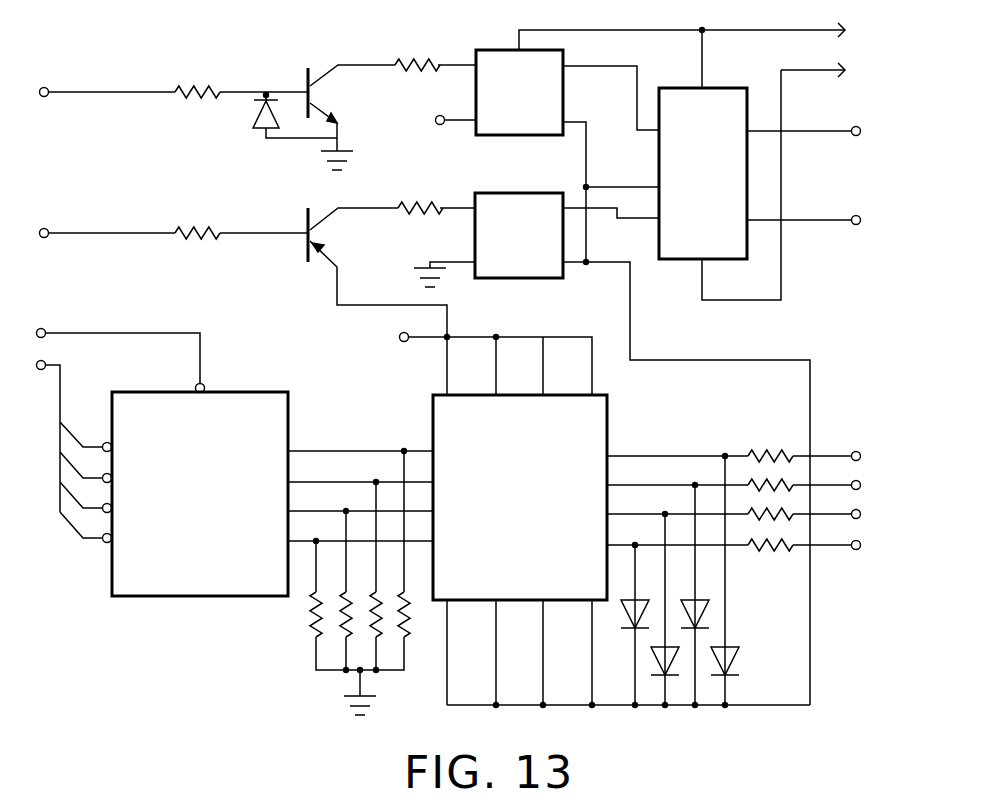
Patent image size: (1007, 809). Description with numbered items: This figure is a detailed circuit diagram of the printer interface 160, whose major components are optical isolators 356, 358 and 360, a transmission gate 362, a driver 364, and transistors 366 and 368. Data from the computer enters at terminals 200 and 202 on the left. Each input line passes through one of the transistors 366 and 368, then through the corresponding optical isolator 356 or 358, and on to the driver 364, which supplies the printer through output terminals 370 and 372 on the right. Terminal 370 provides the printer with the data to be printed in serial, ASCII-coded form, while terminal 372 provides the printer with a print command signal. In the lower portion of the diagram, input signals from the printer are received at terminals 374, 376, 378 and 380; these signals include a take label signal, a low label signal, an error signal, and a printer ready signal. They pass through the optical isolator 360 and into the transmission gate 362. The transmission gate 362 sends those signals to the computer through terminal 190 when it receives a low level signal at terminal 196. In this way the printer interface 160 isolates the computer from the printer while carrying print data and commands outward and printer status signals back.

The terminal 202 is at (49, 89).
The terminal 200 is at (49, 230).
The transistor 366 is at (325, 66).
The transistor 368 is at (320, 209).
The optical isolator 356 is at (506, 49).
The optical isolator 358 is at (522, 193).
The driver 364 is at (695, 87).
The terminal 370 is at (860, 128).
The terminal 372 is at (860, 217).
The terminal 196 is at (46, 330).
The terminal 190 is at (46, 362).
The transmission gate 362 is at (245, 392).
The optical isolator 360 is at (528, 446).
The terminal 374 is at (860, 453).
The terminal 376 is at (860, 482).
The terminal 378 is at (860, 511).
The terminal 380 is at (860, 542).
The printer interface 160 is at (744, 735).